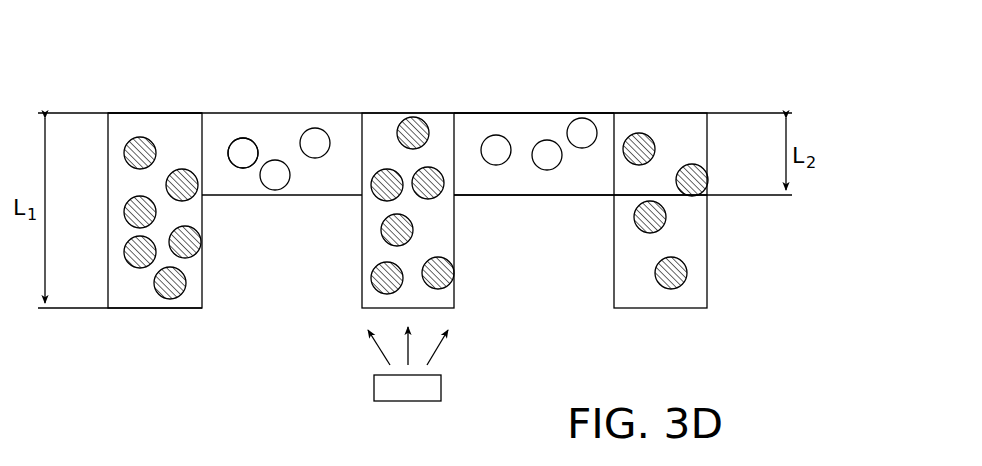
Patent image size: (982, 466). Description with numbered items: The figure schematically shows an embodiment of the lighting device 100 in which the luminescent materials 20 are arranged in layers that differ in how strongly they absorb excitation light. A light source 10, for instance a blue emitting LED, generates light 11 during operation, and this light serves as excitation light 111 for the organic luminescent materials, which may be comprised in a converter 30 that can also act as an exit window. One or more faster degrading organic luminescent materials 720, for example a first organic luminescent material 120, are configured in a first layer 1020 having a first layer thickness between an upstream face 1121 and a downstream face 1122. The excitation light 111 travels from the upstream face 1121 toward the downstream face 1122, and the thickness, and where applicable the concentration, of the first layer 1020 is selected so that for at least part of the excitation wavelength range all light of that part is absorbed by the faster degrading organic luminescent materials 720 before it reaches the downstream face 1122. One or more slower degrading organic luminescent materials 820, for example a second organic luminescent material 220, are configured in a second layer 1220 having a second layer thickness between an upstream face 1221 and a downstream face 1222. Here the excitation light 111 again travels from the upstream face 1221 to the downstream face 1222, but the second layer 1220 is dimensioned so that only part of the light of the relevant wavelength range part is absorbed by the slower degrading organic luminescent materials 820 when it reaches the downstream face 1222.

The lighting device 100 is at (697, 83).
The luminescent materials 20 is at (745, 103).
The converter 30 is at (728, 250).
The light source 10 is at (380, 390).
The light 11 is at (446, 374).
The excitation light 111 is at (435, 358).
The first organic luminescent material 120 is at (128, 252).
The second organic luminescent material 220 is at (247, 147).
The faster degrading organic luminescent materials 720 is at (185, 283).
The slower degrading organic luminescent materials 820 is at (250, 147).
The first layer 1020 is at (95, 97).
The upstream face 1121 is at (157, 305).
The downstream face 1122 is at (150, 115).
The second layer 1220 is at (548, 103).
The upstream face 1221 is at (532, 197).
The downstream face 1222 is at (510, 112).